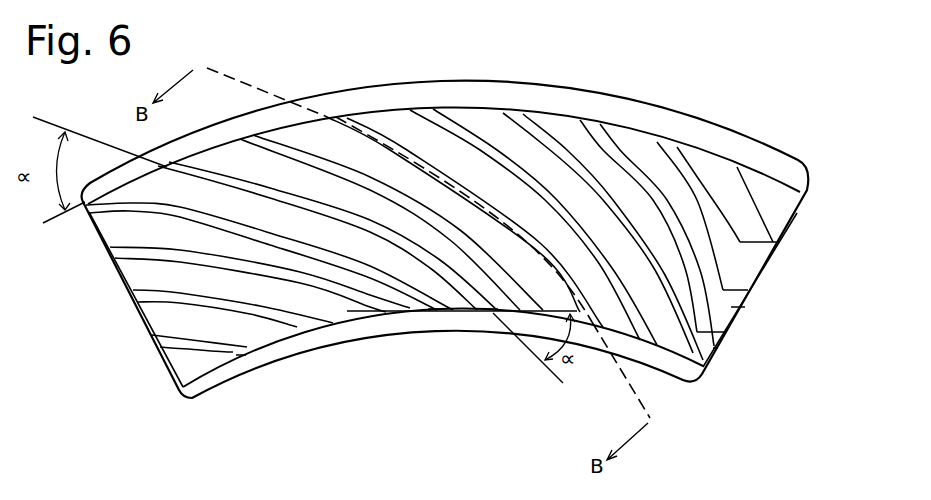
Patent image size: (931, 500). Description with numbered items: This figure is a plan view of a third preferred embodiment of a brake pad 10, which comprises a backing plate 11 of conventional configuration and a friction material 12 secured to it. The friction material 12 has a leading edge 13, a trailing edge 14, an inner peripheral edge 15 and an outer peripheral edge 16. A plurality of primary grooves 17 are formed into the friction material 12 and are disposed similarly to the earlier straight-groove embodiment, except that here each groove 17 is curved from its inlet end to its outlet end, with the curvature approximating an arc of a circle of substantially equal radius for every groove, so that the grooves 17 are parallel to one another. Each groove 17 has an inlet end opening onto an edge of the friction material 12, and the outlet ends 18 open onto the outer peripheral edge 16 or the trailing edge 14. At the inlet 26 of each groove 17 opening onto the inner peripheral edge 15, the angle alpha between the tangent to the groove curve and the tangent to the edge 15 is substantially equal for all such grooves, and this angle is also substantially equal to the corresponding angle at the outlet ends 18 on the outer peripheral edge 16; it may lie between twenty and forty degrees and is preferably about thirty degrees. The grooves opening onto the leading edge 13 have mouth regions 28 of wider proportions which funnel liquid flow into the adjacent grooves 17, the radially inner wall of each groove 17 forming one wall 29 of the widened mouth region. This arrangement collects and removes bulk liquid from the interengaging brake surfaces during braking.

The brake pad 10 is at (485, 239).
The backing plate 11 is at (750, 143).
The friction material 12 is at (638, 147).
The leading edge 13 is at (800, 212).
The trailing edge 14 is at (120, 293).
The inner peripheral edge 15 is at (335, 323).
The outer peripheral edge 16 is at (468, 108).
The primary grooves 17 is at (386, 140).
The outlet ends 18 is at (163, 167).
The inlet 26 is at (241, 349).
The mouth regions 28 is at (753, 255).
The wall of the widened mouth region 29 is at (743, 278).